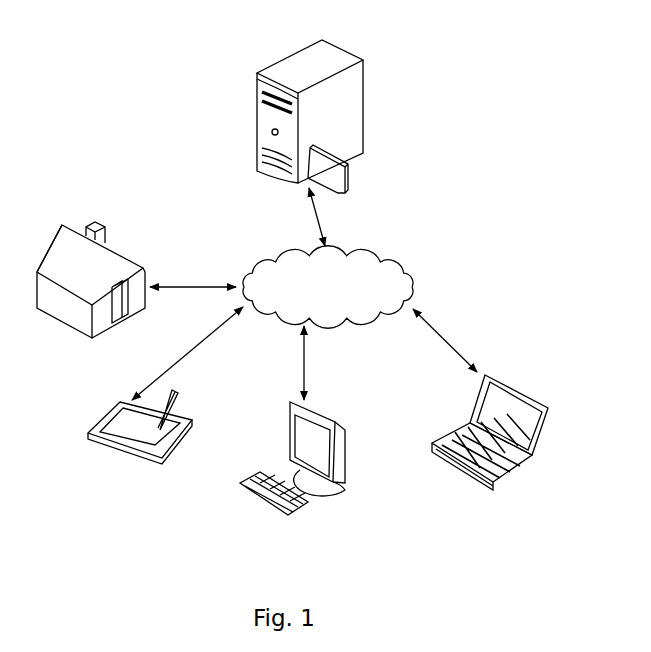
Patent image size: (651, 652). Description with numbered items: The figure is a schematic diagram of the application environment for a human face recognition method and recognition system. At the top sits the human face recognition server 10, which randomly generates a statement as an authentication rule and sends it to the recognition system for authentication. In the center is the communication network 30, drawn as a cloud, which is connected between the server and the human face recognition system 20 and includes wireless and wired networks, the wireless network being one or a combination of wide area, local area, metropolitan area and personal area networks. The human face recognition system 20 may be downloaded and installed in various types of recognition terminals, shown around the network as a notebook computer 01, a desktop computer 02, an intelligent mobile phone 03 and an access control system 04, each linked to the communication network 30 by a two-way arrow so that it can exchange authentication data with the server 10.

The human face recognition server 10 is at (298, 60).
The communication network 30 is at (404, 264).
The access control system 04 is at (97, 225).
The intelligent mobile phone 03 is at (182, 410).
The desktop computer 02 is at (332, 420).
The notebook computer 01 is at (538, 400).
The human face recognition system 20 is at (378, 562).